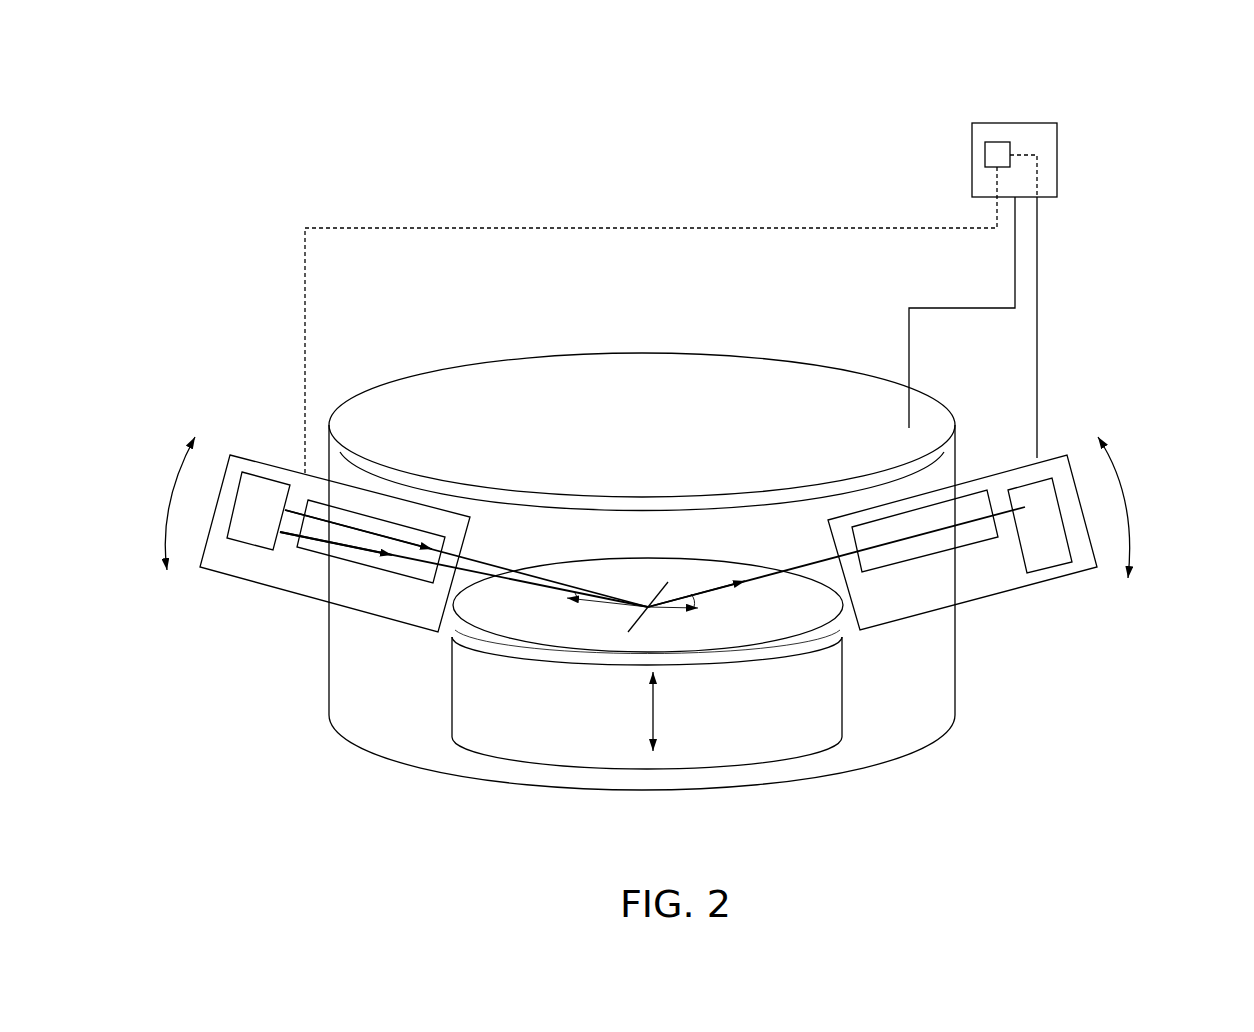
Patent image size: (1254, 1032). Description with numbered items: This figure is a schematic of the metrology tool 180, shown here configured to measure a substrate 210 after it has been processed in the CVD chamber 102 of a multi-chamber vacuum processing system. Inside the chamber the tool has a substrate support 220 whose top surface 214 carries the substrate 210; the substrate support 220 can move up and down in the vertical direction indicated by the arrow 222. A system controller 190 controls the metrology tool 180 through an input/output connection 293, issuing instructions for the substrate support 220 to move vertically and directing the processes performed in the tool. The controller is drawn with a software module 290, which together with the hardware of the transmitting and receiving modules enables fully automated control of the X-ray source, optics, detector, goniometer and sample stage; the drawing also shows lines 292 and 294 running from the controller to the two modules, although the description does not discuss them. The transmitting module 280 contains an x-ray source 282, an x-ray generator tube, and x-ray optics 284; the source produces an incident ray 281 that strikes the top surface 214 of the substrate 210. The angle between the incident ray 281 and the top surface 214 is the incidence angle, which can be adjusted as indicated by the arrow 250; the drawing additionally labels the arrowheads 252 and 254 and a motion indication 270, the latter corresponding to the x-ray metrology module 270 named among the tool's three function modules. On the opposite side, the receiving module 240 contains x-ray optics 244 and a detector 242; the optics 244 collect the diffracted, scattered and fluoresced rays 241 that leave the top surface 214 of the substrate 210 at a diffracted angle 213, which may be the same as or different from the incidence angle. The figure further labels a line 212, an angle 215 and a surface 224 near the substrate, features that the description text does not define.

The CVD chamber 102 is at (690, 355).
The metrology tool 180 is at (242, 450).
The system controller 190 is at (1060, 155).
The substrate 210 is at (662, 563).
The surface normal 212 is at (648, 608).
The diffracted angle 213 is at (566, 601).
The top surface 214 is at (748, 625).
The angle of reflection 215 is at (695, 600).
The substrate support 220 is at (812, 735).
The arrow 222 is at (653, 710).
The support surface 224 is at (845, 627).
The receiving module 240 is at (277, 462).
The diffracted, scattered and fluoresced rays 241 is at (497, 562).
The detector 242 is at (243, 547).
The x-ray optics 244 is at (330, 570).
The arrow 250 is at (168, 497).
The first rotation direction 252 is at (1114, 430).
The second rotation direction 254 is at (1137, 560).
The x-ray metrology module 270 is at (1090, 587).
The transmitting module 280 is at (995, 473).
The incident ray 281 is at (768, 565).
The x-ray source 282 is at (1053, 587).
The x-ray optics 284 is at (928, 565).
The software module 290 is at (990, 140).
The signal line to light source assembly 292 is at (432, 228).
The input/output connection 293 is at (908, 333).
The signal line to detector assembly 294 is at (1015, 270).